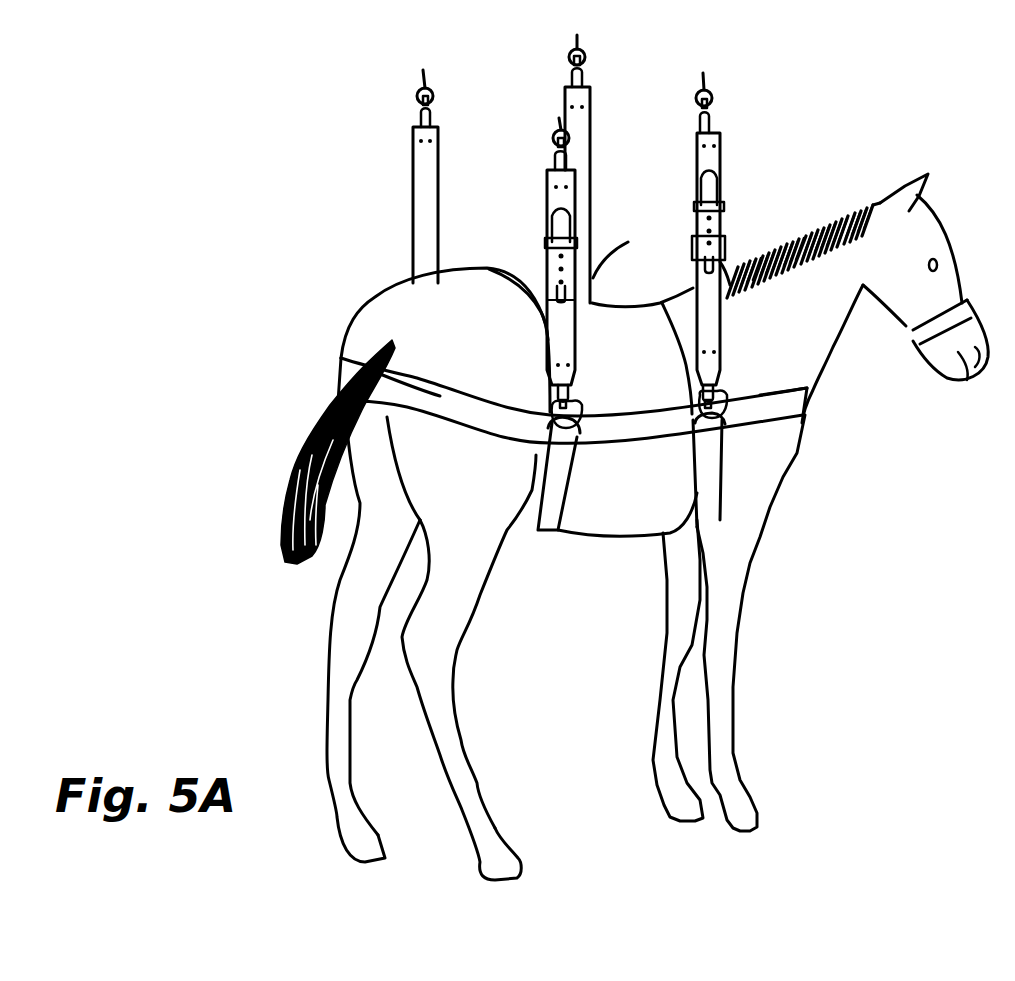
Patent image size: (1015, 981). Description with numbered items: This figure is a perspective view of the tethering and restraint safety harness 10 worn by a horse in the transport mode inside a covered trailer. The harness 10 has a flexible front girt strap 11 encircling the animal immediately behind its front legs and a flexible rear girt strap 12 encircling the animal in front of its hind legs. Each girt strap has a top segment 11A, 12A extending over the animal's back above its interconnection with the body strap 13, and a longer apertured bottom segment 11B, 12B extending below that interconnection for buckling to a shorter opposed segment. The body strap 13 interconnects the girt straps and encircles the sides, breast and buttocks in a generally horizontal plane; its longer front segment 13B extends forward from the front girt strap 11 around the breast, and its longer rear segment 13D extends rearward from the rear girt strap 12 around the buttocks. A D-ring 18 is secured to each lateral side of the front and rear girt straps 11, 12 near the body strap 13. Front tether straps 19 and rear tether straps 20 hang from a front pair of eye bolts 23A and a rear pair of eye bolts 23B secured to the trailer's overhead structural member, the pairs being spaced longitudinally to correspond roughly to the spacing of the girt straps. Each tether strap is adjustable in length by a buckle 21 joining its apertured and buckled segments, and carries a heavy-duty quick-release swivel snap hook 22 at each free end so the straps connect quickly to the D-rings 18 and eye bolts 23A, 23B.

The tethering and restraint safety harness 10 is at (350, 262).
The front girt strap 11 is at (672, 328).
The top segment of front girt strap 11A is at (677, 295).
The bottom segment of front girt strap 11B is at (670, 527).
The rear girt strap 12 is at (522, 325).
The top segment of rear girt strap 12A is at (500, 270).
The bottom segment of rear girt strap 12B is at (542, 538).
The body strap 13 is at (620, 436).
The longer front segment of body strap 13B is at (808, 400).
The longer rear segment of body strap 13D is at (420, 404).
The D-ring 18 is at (584, 412).
The front tether strap 19 is at (593, 120).
The rear tether strap 20 is at (413, 160).
The buckle 21 is at (692, 253).
The quick-release snap hook 22 is at (418, 110).
The front eye bolt 23A is at (586, 56).
The rear eye bolt 23B is at (417, 96).